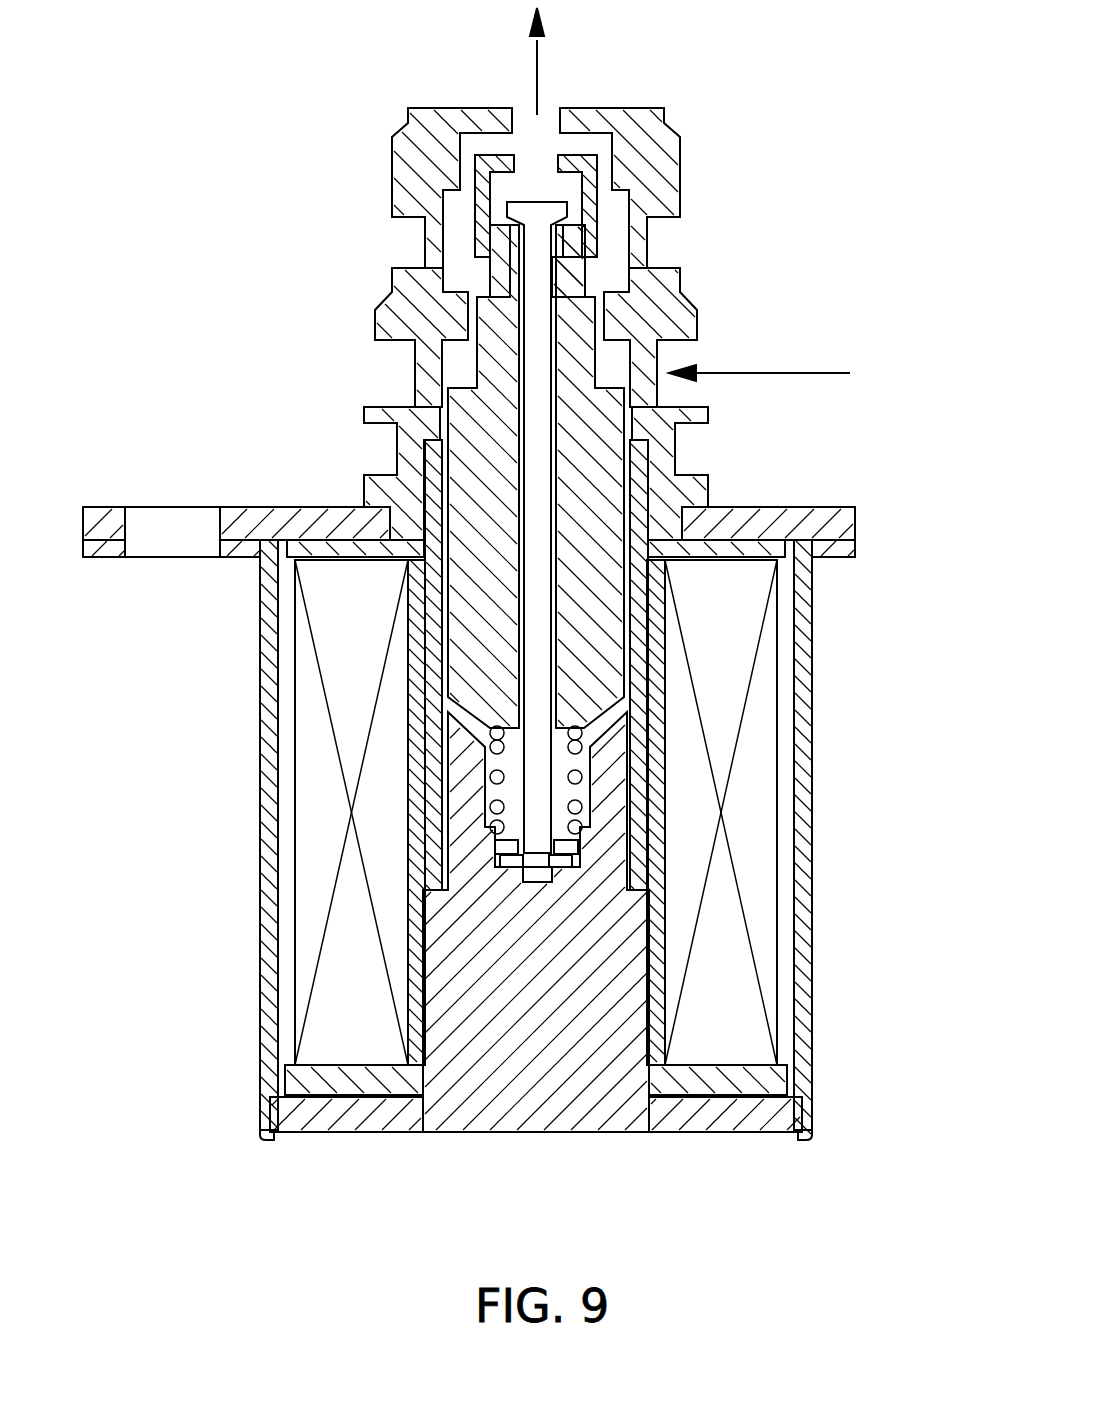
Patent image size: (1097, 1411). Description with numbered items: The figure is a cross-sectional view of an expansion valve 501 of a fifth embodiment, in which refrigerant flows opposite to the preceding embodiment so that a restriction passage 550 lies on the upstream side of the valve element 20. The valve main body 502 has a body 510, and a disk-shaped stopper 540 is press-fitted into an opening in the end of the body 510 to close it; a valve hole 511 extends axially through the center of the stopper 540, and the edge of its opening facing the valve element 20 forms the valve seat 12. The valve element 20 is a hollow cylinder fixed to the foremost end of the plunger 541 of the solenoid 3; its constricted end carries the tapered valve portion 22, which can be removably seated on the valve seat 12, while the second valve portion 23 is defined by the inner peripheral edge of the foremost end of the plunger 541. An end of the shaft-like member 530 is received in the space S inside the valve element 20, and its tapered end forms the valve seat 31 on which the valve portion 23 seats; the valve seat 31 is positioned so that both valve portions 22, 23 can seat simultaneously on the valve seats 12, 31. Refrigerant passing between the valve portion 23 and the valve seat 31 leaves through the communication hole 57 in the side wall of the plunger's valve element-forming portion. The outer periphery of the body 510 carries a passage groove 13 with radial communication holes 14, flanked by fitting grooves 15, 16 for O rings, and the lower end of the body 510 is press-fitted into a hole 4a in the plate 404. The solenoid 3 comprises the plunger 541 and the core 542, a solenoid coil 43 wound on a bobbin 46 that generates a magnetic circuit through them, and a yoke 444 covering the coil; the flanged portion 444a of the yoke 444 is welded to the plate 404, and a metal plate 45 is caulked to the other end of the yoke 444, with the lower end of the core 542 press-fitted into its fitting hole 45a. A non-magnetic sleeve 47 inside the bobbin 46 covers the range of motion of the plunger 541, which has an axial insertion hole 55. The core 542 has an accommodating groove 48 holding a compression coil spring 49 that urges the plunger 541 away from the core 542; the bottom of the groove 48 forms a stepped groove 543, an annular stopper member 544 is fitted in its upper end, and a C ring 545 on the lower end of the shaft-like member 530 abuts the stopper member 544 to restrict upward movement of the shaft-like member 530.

The expansion valve 501 is at (790, 226).
The valve main body 502 is at (668, 100).
The stopper 540 is at (440, 106).
The valve portion 22 is at (503, 132).
The valve hole 511 is at (568, 118).
The valve seat 12 is at (604, 120).
The body 510 is at (470, 168).
The valve element 20 is at (455, 180).
The valve portion 23 is at (508, 222).
The space S is at (590, 178).
The fitting groove 15 is at (690, 222).
The valve seat 31 is at (586, 238).
The communication hole 57 is at (586, 262).
The restriction passage 550 is at (610, 322).
The communication holes 14 is at (650, 345).
The passage groove 13 is at (410, 345).
The shaft-like member 530 is at (530, 430).
The fitting groove 16 is at (695, 430).
The plate 404 is at (260, 495).
The hole 4a is at (398, 546).
The flanged portion 444a is at (108, 560).
The insertion hole 55 is at (548, 620).
The plunger 541 is at (470, 665).
The solenoid coil 43 is at (312, 770).
The solenoid 3 is at (830, 722).
The accommodating groove 48 is at (584, 766).
The sleeve 47 is at (432, 832).
The compression coil spring 49 is at (584, 798).
The yoke 444 is at (270, 905).
The stopper member 544 is at (578, 845).
The C ring 545 is at (575, 862).
The stepped groove 543 is at (562, 880).
The bobbin 46 is at (300, 1078).
The plate 45 is at (355, 1134).
The fitting hole 45a is at (428, 1120).
The core 542 is at (600, 1100).